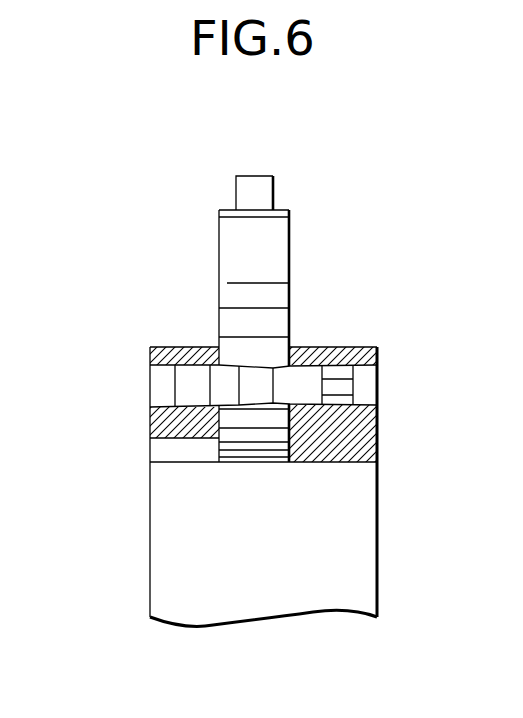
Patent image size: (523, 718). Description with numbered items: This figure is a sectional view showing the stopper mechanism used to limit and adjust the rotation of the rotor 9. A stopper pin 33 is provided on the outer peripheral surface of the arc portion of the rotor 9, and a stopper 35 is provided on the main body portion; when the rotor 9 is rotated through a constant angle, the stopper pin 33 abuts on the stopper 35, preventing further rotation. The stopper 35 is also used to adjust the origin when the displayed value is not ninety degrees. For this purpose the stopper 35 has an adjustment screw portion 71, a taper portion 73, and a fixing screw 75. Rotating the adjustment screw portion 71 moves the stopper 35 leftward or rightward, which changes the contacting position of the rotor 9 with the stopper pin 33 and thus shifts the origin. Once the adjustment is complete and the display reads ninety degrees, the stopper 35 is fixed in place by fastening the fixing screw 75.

The rotor 9 is at (273, 262).
The stopper pin 33 is at (255, 176).
The stopper 35 is at (134, 386).
The adjustment screw portion 71 is at (189, 373).
The taper portion 73 is at (258, 392).
The fixing screw 75 is at (367, 387).